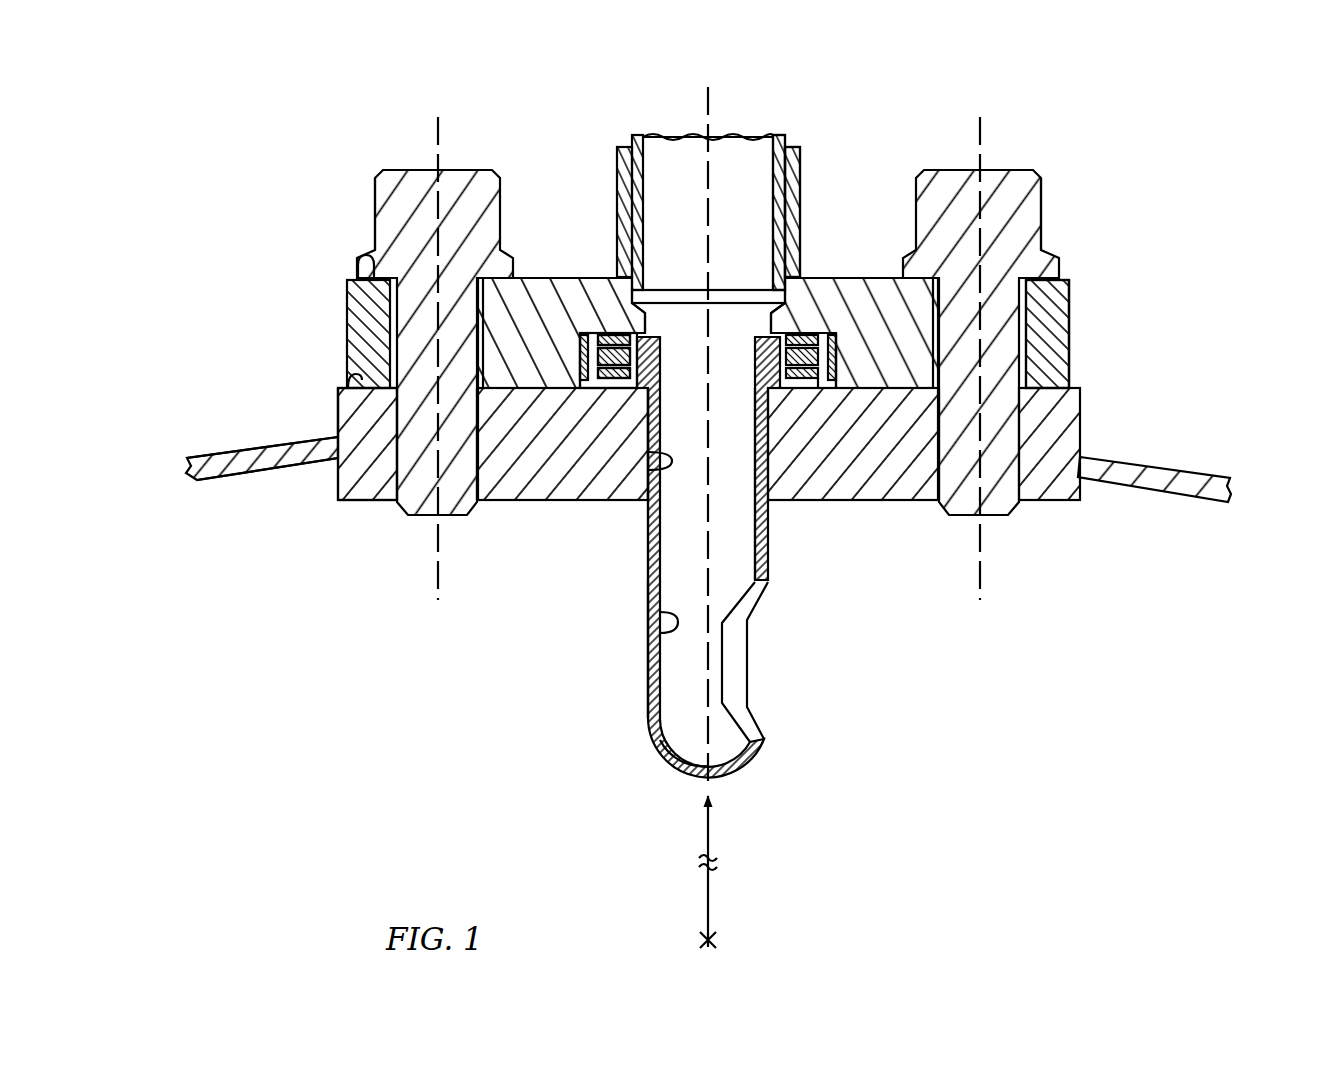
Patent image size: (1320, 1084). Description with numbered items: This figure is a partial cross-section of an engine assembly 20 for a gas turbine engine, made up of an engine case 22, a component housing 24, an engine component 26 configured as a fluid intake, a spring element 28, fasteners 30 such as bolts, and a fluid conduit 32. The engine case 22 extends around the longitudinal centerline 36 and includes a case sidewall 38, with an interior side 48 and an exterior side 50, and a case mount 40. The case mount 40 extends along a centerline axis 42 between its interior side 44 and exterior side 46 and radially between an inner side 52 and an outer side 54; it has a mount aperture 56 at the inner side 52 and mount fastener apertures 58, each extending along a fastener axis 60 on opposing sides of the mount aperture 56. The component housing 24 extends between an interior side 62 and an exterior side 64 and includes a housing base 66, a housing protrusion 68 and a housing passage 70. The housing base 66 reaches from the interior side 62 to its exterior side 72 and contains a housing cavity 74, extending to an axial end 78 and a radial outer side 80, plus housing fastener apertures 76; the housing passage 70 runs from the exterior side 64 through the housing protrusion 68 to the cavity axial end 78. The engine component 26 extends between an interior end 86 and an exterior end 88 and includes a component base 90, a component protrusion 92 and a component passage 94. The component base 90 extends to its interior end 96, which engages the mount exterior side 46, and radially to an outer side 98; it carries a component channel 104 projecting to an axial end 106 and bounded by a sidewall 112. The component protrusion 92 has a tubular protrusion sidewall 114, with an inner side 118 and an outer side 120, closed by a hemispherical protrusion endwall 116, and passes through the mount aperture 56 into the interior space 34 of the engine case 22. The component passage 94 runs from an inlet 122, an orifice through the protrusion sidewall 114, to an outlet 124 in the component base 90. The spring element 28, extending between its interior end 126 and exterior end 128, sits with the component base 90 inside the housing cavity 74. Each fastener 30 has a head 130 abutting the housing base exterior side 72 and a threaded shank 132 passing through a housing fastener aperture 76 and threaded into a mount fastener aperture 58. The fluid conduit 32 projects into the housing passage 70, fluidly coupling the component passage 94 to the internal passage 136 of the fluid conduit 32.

The engine assembly 20 is at (1220, 113).
The engine case 22 is at (1214, 460).
The component housing 24 is at (1074, 300).
The engine component 26 is at (641, 651).
The spring element 28 is at (808, 333).
The fastener 30 is at (370, 178).
The fluid conduit 32 is at (767, 145).
The interior space 34 is at (907, 740).
The longitudinal centerline 36 is at (712, 942).
The case sidewall 38 is at (186, 468).
The case mount 40 is at (332, 508).
The centerline axis 42 is at (707, 87).
The mount interior side 44 is at (356, 502).
The mount exterior side 46 is at (348, 375).
The case sidewall interior side 48 is at (213, 483).
The case sidewall exterior side 50 is at (215, 443).
The mount inner side 52 is at (648, 463).
The mount outer side 54 is at (338, 430).
The mount aperture 56 is at (645, 486).
The mount fastener aperture 58 is at (481, 465).
The fastener axis 60 is at (437, 117).
The housing interior side 62 is at (377, 393).
The housing exterior side 64 is at (633, 140).
The housing base 66 is at (1073, 352).
The housing protrusion 68 is at (806, 175).
The housing passage 70 is at (630, 228).
The housing base exterior side 72 is at (362, 258).
The housing cavity 74 is at (852, 366).
The housing fastener aperture 76 is at (388, 325).
The cavity axial end 78 is at (586, 350).
The cavity outer side 80 is at (590, 386).
The component interior end 86 is at (703, 796).
The component exterior end 88 is at (600, 336).
The component base 90 is at (810, 391).
The component protrusion 92 is at (645, 580).
The component passage 94 is at (748, 540).
The component base interior end 96 is at (830, 386).
The component base outer side 98 is at (882, 378).
The component channel 104 is at (596, 358).
The channel axial end 106 is at (786, 358).
The component base sidewall 112 is at (840, 360).
The protrusion sidewall 114 is at (646, 702).
The protrusion endwall 116 is at (674, 773).
The protrusion sidewall inner side 118 is at (662, 632).
The protrusion sidewall outer side 120 is at (646, 603).
The passage inlet 122 is at (742, 660).
The passage outlet 124 is at (736, 335).
The spring element interior end 126 is at (640, 392).
The spring element exterior end 128 is at (614, 336).
The fastener head 130 is at (375, 205).
The threaded shank 132 is at (415, 517).
The internal passage 136 is at (731, 160).